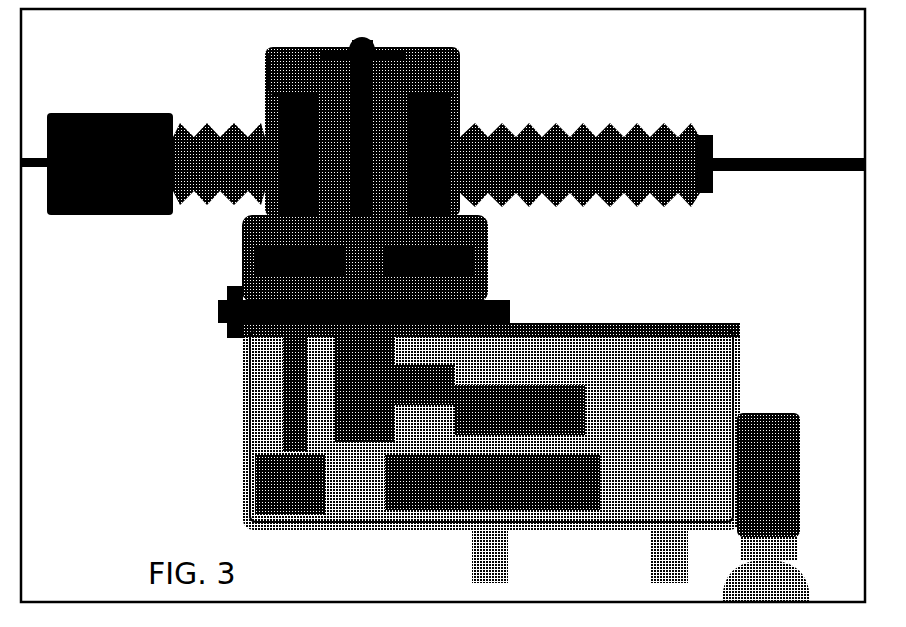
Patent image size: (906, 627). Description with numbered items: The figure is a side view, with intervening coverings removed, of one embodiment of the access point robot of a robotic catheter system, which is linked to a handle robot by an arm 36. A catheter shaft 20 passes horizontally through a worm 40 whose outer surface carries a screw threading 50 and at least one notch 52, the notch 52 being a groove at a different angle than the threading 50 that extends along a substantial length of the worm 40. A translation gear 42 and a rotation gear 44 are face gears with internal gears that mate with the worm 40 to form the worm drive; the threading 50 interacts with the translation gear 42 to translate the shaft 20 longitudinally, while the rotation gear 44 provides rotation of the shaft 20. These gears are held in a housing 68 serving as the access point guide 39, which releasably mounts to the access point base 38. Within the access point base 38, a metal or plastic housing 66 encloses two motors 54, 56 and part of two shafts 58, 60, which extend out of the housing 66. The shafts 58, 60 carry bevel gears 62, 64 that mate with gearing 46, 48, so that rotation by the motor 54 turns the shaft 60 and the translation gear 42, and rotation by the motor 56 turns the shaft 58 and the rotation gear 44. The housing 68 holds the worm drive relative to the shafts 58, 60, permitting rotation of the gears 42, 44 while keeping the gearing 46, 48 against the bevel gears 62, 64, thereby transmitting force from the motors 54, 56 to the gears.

The shaft 20 is at (37, 167).
The arm 36 is at (766, 507).
The access point base 38 is at (735, 348).
The access point guide 39 is at (467, 102).
The worm 40 is at (623, 133).
The translation gear 42 is at (409, 137).
The rotation gear 44 is at (244, 164).
The gearing 46 is at (282, 56).
The gearing 48 is at (410, 70).
The threading 50 is at (670, 122).
The notch 52 is at (708, 183).
The motor 54 is at (520, 410).
The motor 56 is at (492, 482).
The shaft 58 is at (300, 386).
The shaft 60 is at (455, 365).
The bevel gear 62 is at (243, 262).
The bevel gear 64 is at (488, 262).
The housing 66 is at (243, 481).
The housing 68 is at (267, 72).